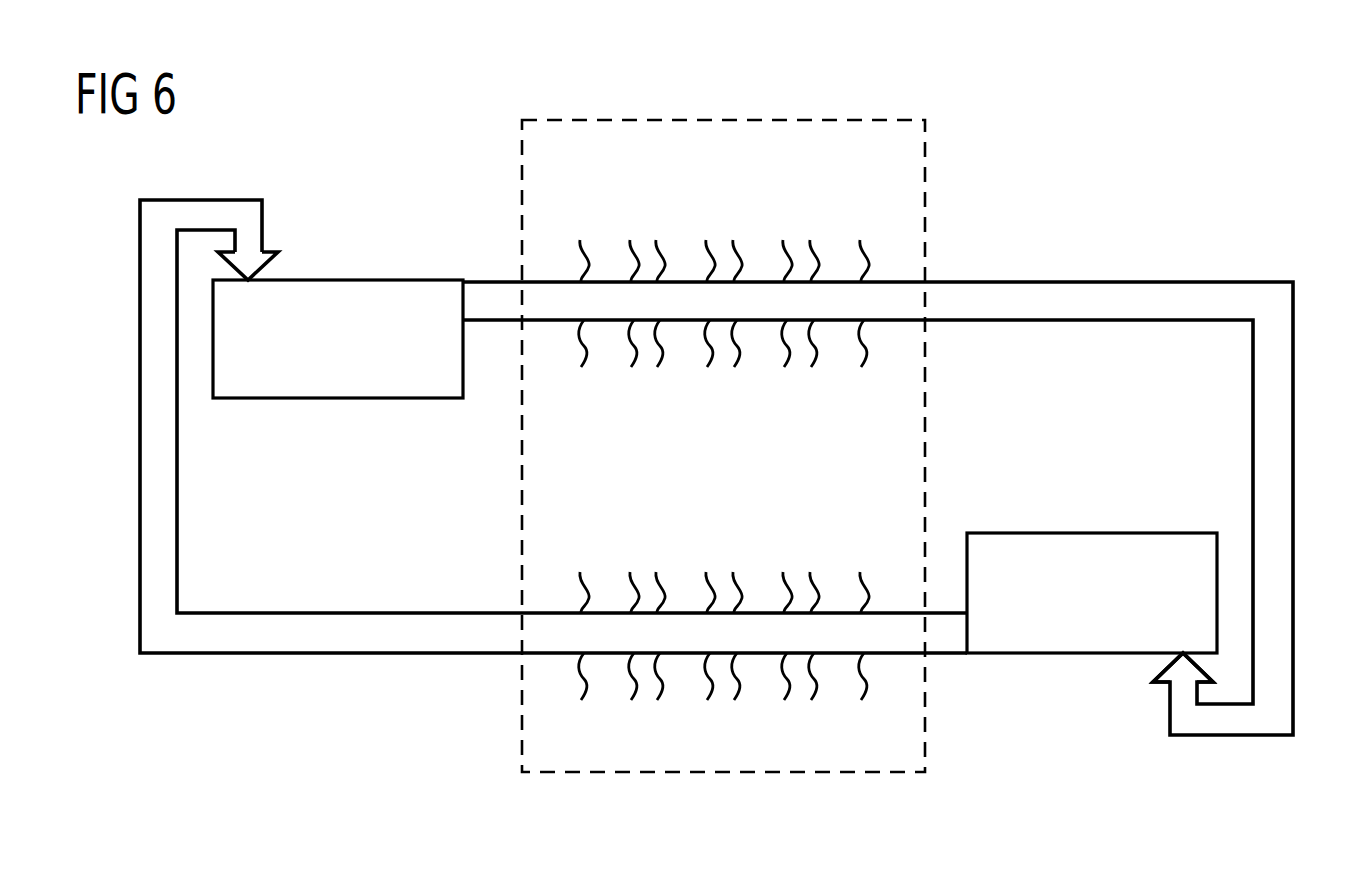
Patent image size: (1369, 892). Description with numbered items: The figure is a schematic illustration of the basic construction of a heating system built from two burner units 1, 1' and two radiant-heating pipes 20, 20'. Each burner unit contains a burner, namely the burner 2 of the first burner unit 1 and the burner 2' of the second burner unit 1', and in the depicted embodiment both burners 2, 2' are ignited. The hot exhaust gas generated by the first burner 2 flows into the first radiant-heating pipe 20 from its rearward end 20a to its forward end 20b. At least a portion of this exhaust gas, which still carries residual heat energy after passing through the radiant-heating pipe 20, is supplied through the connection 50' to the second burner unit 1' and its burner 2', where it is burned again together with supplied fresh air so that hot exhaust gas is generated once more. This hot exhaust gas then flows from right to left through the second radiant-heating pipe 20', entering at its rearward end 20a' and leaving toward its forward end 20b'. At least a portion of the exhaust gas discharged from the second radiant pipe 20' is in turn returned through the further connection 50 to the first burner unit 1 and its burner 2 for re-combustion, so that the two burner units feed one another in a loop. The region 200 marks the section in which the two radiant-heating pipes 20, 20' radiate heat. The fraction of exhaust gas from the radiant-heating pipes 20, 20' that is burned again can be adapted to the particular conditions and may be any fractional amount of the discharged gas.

The burner unit 1 is at (294, 217).
The burner unit 1' is at (1126, 720).
The burner 2 is at (338, 309).
The burner 2' is at (1092, 561).
The radiant-heating pipe 20 is at (724, 283).
The rearward end 20a is at (558, 283).
The forward end 20b is at (887, 283).
The radiant-heating pipe 20' is at (724, 657).
The rearward end 20a' is at (889, 657).
The forward end 20b' is at (558, 657).
The further connection 50 is at (520, 426).
The connection 50' is at (911, 508).
The heat exchange region 200 is at (757, 489).